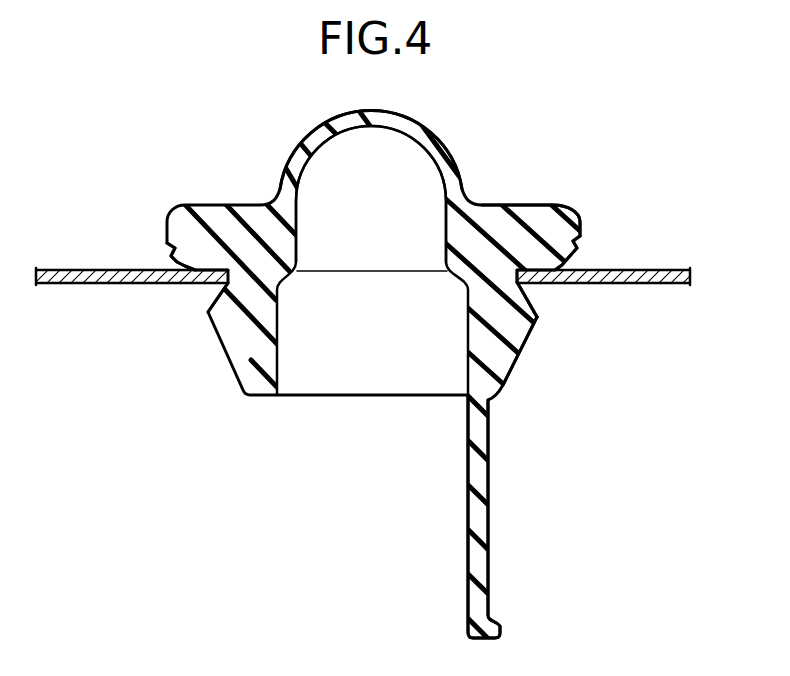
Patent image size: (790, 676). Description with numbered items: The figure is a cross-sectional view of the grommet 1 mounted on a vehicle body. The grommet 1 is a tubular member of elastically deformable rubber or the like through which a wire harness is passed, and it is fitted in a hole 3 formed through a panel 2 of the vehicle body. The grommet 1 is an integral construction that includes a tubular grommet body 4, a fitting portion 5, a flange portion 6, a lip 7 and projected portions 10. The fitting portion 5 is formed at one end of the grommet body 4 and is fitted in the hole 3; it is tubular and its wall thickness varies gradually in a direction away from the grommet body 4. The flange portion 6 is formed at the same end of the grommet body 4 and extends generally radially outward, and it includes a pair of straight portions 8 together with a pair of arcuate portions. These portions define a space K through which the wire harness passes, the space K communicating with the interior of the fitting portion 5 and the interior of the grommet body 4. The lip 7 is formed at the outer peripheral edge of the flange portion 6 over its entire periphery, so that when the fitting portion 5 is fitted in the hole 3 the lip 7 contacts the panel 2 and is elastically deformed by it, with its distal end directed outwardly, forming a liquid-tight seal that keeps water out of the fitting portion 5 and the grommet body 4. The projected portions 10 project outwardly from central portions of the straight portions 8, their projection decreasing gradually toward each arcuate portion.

The cap fastener 1 is at (552, 150).
The plate 2 is at (637, 270).
The shank 3 is at (517, 279).
The dome portion 4 is at (420, 125).
The leg 5 is at (515, 376).
The flange 6 is at (535, 205).
The mounting hole 7 is at (591, 272).
The engaging claw 8 is at (556, 273).
The seal lip 10 is at (565, 213).
The space K is at (397, 218).